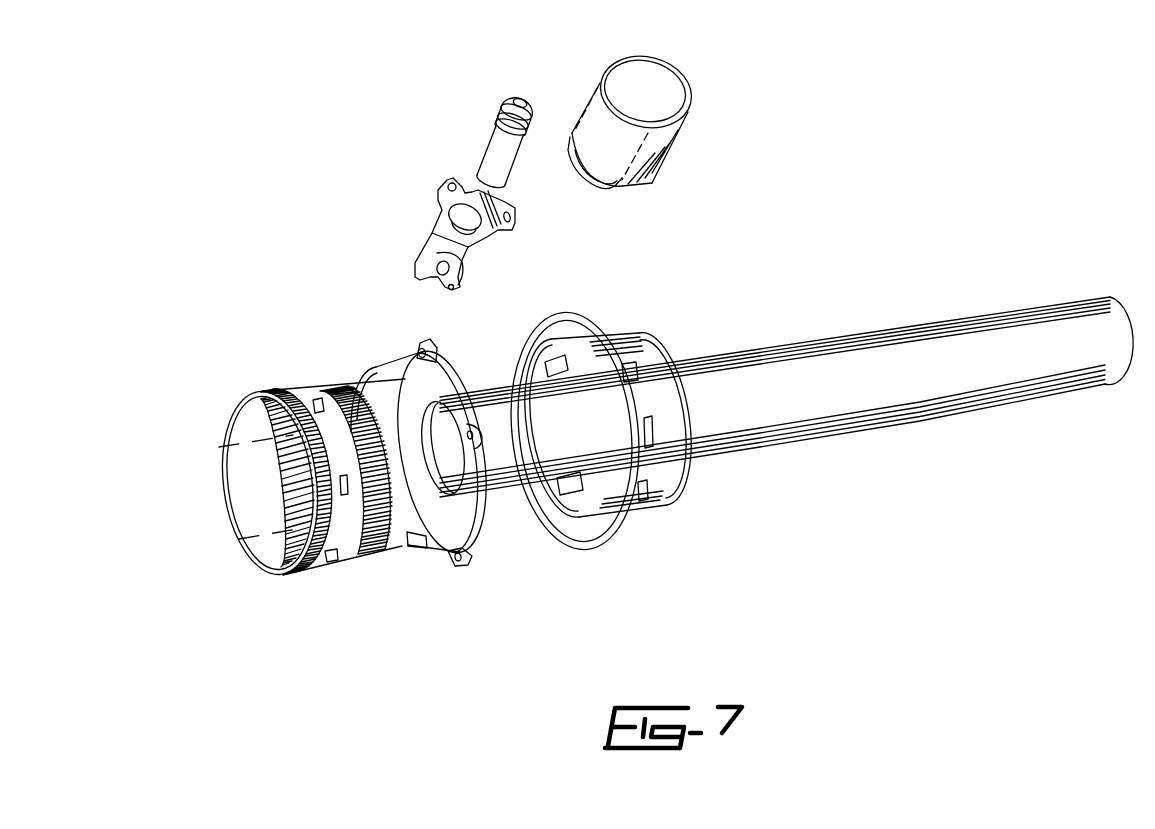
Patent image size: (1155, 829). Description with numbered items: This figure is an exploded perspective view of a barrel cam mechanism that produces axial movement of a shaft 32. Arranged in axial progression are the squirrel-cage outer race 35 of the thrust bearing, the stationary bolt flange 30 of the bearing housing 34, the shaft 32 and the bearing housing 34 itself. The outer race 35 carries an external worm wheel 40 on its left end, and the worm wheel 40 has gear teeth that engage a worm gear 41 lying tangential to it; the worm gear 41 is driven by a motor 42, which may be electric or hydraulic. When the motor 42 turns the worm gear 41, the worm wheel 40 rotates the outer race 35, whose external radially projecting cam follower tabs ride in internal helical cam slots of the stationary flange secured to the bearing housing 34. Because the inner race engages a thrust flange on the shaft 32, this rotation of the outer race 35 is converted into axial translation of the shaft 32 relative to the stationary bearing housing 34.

The bolt flange 30 is at (473, 500).
The shaft 32 is at (1027, 330).
The bearing housing 34 is at (658, 502).
The outer race 35 is at (254, 428).
The worm wheel 40 is at (300, 413).
The worm gear 41 is at (490, 103).
The motor 42 is at (680, 90).